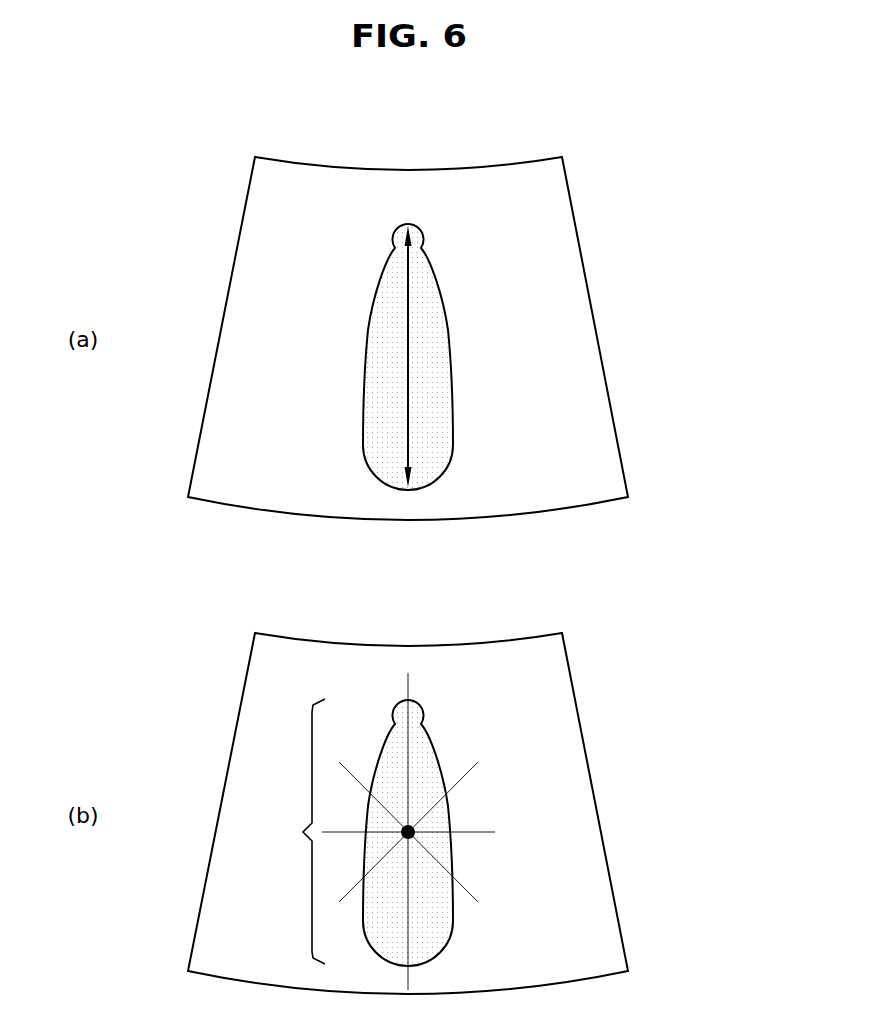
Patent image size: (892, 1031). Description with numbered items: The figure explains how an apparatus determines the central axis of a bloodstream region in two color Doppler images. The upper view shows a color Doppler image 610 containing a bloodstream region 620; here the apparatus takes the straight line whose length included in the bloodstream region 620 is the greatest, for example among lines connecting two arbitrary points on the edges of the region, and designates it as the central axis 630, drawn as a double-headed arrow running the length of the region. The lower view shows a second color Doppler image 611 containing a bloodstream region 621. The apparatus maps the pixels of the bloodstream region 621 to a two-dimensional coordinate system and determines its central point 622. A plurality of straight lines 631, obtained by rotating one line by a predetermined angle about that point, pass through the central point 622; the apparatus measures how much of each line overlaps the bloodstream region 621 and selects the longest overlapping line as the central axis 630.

In FIG. 6A, the color Doppler image 610 is at (497, 208).
In FIG. 6A, the bloodstream region 620 is at (447, 345).
In FIG. 6A, the central axis 630 is at (410, 408).
In FIG. 6B, the color Doppler image 611 is at (497, 684).
In FIG. 6B, the bloodstream region 621 is at (445, 850).
In FIG. 6B, the central point 622 is at (414, 827).
In FIG. 6B, the plurality of straight lines 631 is at (292, 831).